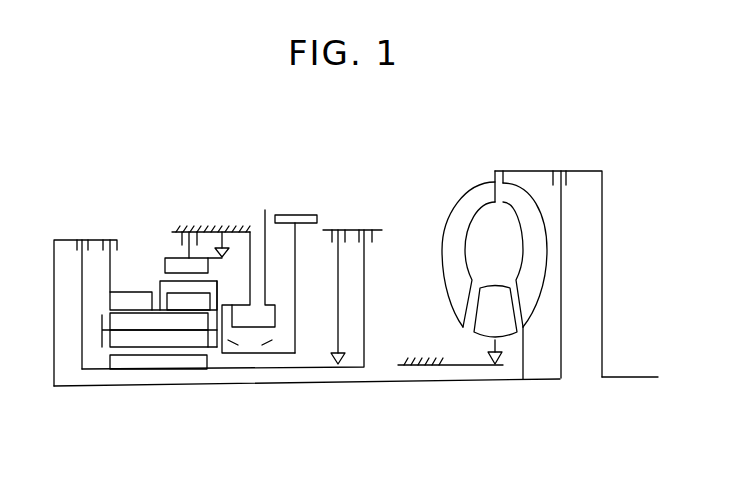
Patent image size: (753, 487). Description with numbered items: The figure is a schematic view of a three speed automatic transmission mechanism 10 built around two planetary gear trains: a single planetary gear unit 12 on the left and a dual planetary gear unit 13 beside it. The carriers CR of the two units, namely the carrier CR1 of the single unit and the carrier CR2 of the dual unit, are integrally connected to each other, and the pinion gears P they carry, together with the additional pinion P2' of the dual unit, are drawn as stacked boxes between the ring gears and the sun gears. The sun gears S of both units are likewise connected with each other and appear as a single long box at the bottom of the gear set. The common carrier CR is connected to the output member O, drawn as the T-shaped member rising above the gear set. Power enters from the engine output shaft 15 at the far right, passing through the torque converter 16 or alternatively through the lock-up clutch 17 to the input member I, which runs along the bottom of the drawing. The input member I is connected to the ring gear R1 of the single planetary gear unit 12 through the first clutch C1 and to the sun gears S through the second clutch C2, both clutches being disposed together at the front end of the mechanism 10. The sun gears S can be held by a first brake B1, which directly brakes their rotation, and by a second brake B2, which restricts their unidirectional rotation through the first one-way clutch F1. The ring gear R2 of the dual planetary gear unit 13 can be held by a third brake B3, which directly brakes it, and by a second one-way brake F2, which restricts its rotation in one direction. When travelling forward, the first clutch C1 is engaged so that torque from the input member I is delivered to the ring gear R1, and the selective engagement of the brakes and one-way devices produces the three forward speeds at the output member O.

The three speed transmission mechanism 10 is at (88, 172).
The single planetary gear unit 12 is at (130, 277).
The dual planetary gear unit 13 is at (166, 250).
The engine output shaft 15 is at (633, 371).
The torque converter 16 is at (460, 187).
The lock-up clutch 17 is at (572, 178).
The input member I is at (335, 383).
The output member O is at (300, 213).
The carrier CR is at (104, 354).
The sun gears S is at (152, 357).
The ring gear R1 is at (131, 301).
The ring gear R2 is at (193, 266).
The carrier CR1 is at (155, 330).
The carrier CR2 is at (181, 302).
The pinion gears P is at (163, 339).
The pinion gear P2' is at (205, 288).
The first clutch C1 is at (108, 256).
The second clutch C2 is at (79, 295).
The first brake B1 is at (368, 226).
The second brake B2 is at (352, 281).
The third brake B3 is at (211, 233).
The first one-way clutch F1 is at (331, 349).
The second one-way brake F2 is at (226, 233).